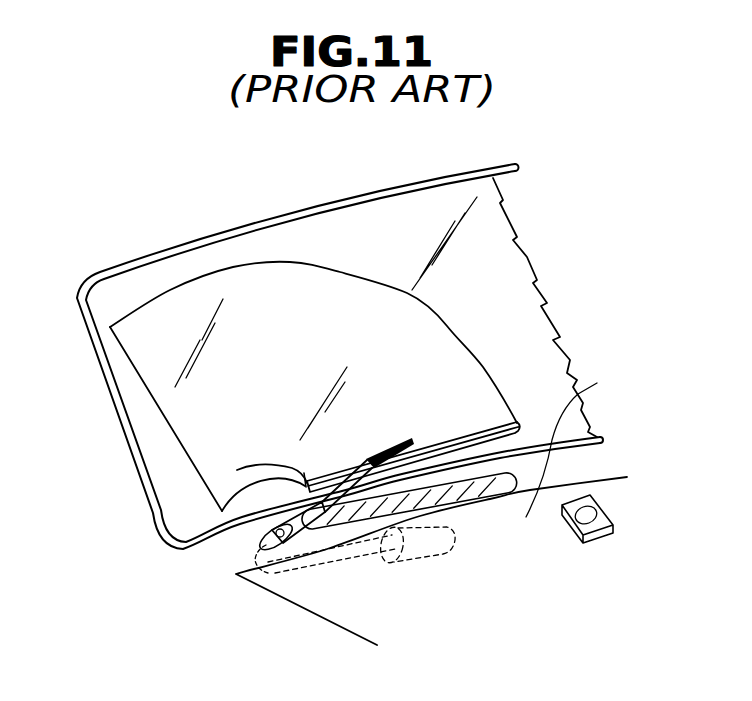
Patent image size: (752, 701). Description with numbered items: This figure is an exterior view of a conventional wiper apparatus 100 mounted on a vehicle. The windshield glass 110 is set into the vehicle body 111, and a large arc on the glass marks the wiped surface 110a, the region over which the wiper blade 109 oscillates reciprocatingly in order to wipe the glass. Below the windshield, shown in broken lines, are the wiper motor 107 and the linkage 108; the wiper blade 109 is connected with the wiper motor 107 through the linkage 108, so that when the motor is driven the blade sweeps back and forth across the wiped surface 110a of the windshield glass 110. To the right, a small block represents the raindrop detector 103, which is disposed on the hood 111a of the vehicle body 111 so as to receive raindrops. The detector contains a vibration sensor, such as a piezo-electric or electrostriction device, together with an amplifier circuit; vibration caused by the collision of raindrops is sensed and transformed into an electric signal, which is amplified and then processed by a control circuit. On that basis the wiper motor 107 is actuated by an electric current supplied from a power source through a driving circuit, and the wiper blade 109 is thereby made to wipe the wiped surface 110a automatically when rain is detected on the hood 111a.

The wiper apparatus 100 is at (416, 362).
The raindrop detector 103 is at (600, 511).
The wiper motor 107 is at (397, 562).
The linkage 108 is at (285, 568).
The wiper blade 109 is at (237, 470).
The windshield glass 110 is at (303, 237).
The wiped surface 110a is at (250, 337).
The vehicle body 111 is at (96, 274).
The hood 111a is at (589, 441).